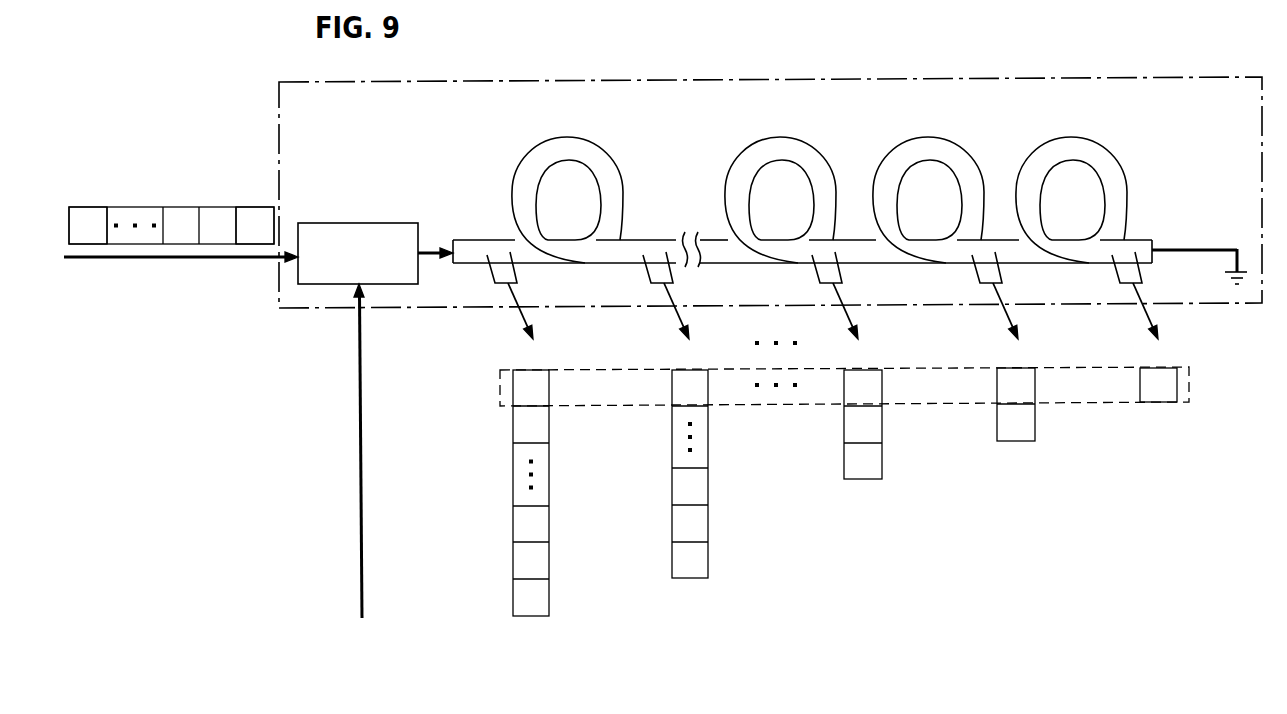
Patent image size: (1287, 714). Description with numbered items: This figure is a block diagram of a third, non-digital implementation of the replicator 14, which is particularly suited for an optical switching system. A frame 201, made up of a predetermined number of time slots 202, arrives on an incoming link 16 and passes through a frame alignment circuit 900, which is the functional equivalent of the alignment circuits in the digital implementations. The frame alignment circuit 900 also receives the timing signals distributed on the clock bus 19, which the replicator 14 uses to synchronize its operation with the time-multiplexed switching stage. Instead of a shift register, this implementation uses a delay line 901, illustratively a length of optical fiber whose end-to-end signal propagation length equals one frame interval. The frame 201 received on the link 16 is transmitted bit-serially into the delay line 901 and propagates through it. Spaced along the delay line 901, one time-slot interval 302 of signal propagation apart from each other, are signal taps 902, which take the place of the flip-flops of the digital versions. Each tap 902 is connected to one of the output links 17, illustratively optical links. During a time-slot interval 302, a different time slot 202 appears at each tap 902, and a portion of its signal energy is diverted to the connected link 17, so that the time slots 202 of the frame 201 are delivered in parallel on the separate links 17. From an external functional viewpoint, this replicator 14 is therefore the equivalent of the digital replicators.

The replicator 14 is at (770, 192).
The link 16 is at (185, 259).
The line 17 is at (515, 320).
The clock bus 19 is at (362, 568).
The frame 201 is at (143, 207).
The time slot 202 is at (80, 207).
The time-slot interval 302 is at (745, 385).
The frame alignment circuit 900 is at (367, 222).
The delay line 901 is at (785, 135).
The signal tap 902 is at (515, 263).